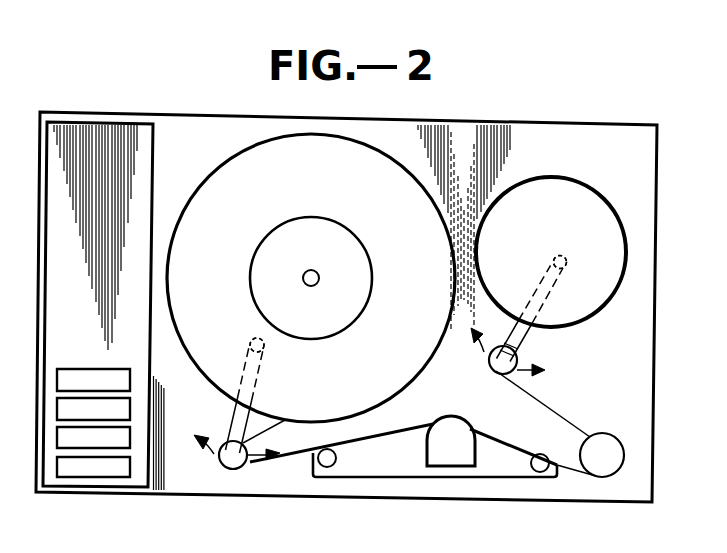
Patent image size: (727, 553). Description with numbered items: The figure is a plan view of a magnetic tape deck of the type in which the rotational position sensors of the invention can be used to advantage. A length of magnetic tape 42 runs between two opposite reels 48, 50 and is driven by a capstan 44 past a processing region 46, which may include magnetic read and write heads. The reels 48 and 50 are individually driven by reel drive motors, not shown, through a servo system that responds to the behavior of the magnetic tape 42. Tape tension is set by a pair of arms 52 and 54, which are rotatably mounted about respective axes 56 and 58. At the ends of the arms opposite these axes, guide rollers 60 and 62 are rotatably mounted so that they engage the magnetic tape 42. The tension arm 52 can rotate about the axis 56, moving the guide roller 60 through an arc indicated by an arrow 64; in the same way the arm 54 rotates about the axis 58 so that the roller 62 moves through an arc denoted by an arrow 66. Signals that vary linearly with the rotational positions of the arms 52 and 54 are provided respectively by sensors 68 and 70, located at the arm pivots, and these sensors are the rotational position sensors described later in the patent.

The magnetic tape 42 is at (291, 458).
The capstan 44 is at (608, 457).
The processing region 46 is at (452, 460).
The reel 48 is at (327, 143).
The reel 50 is at (613, 247).
The tension arm 52 is at (240, 419).
The arm 54 is at (518, 330).
The axis 56 is at (265, 351).
The axis 58 is at (563, 271).
The guide roller 60 is at (226, 463).
The guide roller 62 is at (499, 371).
The arrow 64 is at (256, 462).
The arrow 66 is at (484, 350).
The sensor 68 is at (250, 347).
The sensor 70 is at (552, 256).